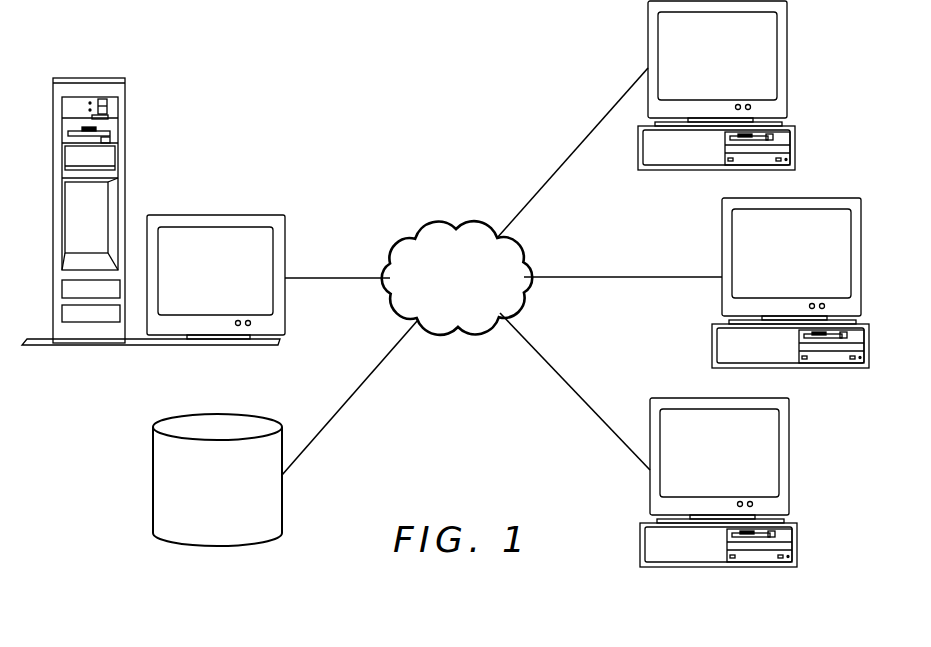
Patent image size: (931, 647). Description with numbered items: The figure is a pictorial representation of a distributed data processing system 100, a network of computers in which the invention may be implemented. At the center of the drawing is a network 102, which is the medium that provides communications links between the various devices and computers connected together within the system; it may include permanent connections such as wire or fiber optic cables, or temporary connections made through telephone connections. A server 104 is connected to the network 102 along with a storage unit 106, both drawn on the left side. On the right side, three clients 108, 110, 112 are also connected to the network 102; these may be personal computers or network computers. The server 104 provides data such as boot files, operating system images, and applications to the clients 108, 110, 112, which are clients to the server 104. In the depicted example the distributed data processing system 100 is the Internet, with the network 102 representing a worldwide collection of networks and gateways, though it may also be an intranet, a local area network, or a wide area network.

The distributed data processing system 100 is at (245, 56).
The network 102 is at (438, 305).
The server 104 is at (196, 283).
The storage unit 106 is at (198, 519).
The client 108 is at (716, 98).
The client 110 is at (790, 296).
The client 112 is at (718, 495).